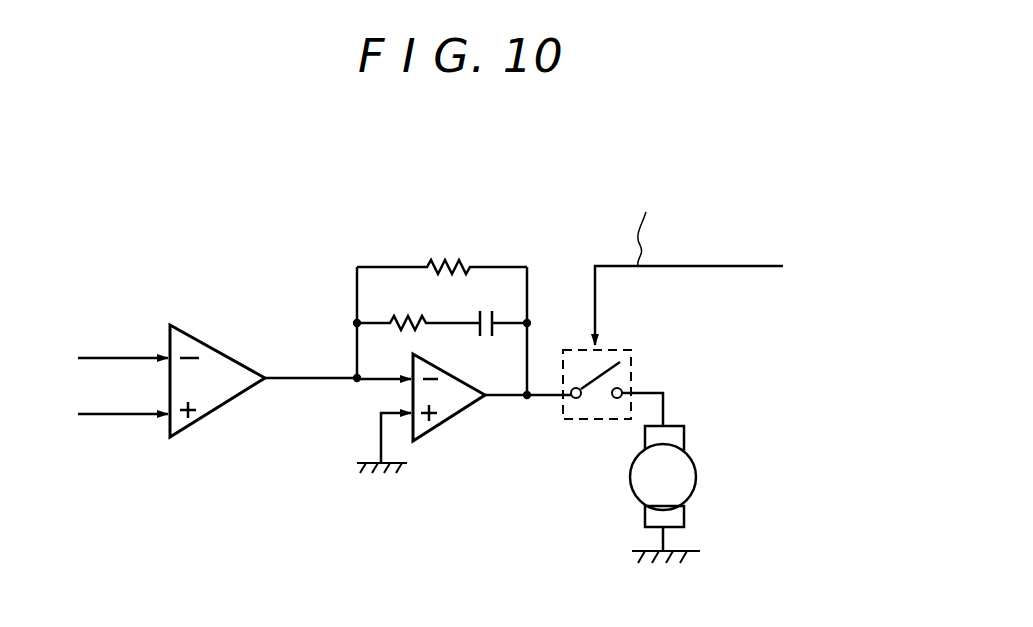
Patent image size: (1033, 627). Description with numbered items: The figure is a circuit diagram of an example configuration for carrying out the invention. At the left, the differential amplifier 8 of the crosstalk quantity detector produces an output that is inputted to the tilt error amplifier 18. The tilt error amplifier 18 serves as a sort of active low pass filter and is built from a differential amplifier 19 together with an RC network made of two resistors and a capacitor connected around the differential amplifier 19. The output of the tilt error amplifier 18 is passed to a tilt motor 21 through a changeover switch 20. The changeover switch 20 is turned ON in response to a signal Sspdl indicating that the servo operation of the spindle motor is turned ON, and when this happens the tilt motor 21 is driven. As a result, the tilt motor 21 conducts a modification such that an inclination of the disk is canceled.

The differential amplifier 8 is at (200, 338).
The tilt error amplifier 18 is at (393, 240).
The differential amplifier 19 is at (452, 420).
The changeover switch 20 is at (633, 372).
The tilt motor 21 is at (697, 462).